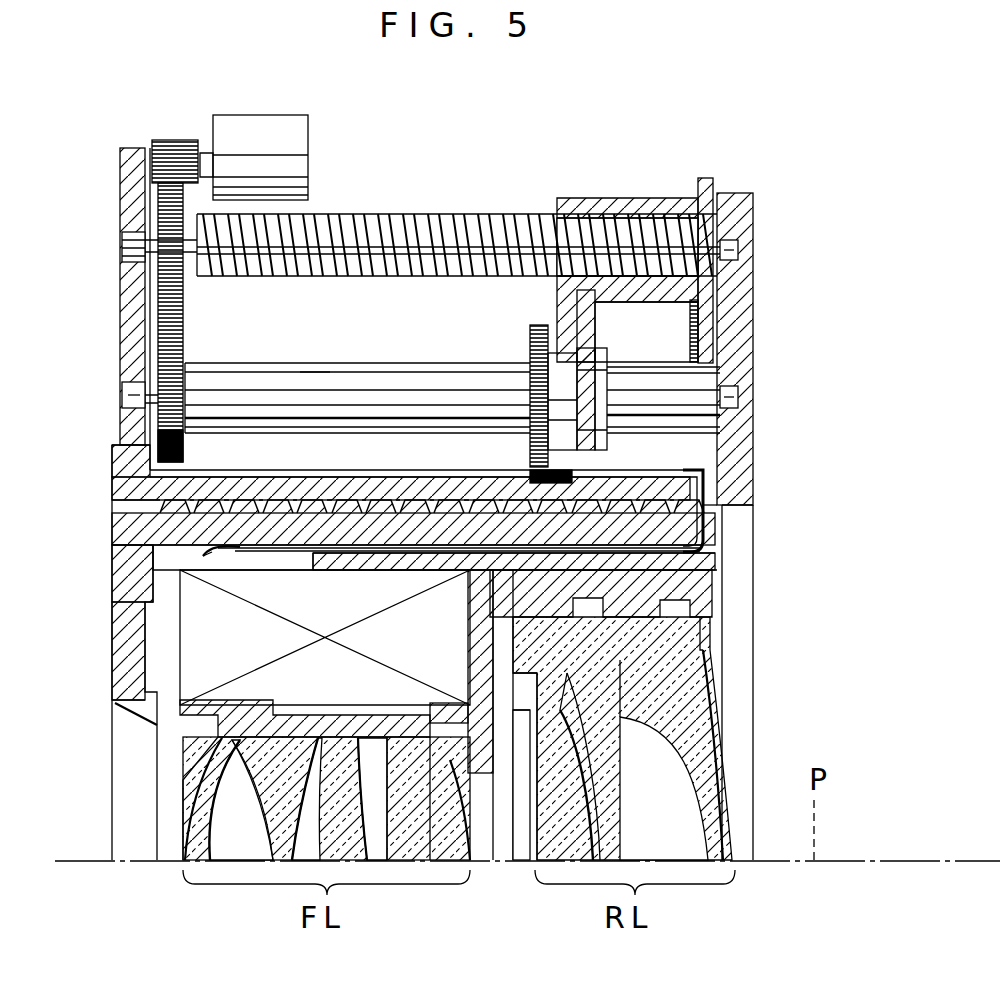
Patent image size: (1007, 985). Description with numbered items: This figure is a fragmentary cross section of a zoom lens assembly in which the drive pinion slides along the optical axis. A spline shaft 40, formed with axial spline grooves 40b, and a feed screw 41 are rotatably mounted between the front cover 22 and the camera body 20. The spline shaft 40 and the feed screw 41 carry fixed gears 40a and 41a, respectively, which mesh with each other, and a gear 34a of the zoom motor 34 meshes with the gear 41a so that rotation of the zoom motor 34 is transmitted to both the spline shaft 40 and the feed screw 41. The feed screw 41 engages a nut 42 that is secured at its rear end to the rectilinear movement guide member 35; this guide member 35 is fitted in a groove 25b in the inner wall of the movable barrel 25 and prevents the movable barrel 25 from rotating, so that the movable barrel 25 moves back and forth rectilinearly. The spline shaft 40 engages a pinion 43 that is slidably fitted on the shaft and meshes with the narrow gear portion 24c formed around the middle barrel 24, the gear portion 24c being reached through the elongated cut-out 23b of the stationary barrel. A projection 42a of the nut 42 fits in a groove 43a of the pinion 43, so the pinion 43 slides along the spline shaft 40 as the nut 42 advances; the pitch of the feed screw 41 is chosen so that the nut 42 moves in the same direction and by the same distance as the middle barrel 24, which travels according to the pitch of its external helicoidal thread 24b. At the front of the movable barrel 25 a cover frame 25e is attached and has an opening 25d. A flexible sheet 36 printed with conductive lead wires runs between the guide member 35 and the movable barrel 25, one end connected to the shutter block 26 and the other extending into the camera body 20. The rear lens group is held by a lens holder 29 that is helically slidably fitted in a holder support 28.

The camera body 20 is at (760, 223).
The front cover 22 is at (128, 195).
The elongated cut-out 23b is at (150, 448).
The middle barrel 24 is at (232, 498).
The external helicoidal thread 24b is at (722, 470).
The gear portion 24c is at (545, 482).
The movable barrel 25 is at (362, 560).
The groove 25b is at (302, 565).
The opening 25d is at (143, 722).
The cover frame 25e is at (127, 583).
The shutter block 26 is at (190, 633).
The holder support 28 is at (700, 595).
The lens holder 29 is at (705, 633).
The zoom motor 34 is at (255, 115).
The gear 34a is at (178, 140).
The rectilinear movement guide member 35 is at (715, 315).
The flexible sheet 36 is at (243, 550).
The spline shaft 40 is at (370, 355).
The gear 40a is at (188, 342).
The spline grooves 40b is at (313, 385).
The feed screw 41 is at (435, 212).
The gear 41a is at (160, 290).
The nut 42 is at (620, 198).
The projection 42a is at (598, 338).
The pinion 43 is at (530, 356).
The groove 43a is at (586, 375).